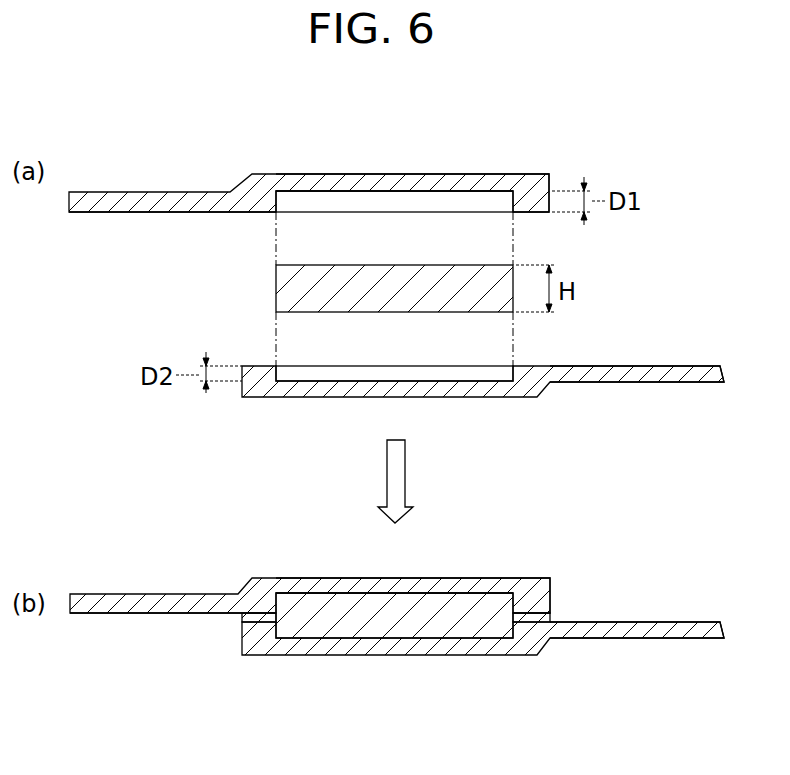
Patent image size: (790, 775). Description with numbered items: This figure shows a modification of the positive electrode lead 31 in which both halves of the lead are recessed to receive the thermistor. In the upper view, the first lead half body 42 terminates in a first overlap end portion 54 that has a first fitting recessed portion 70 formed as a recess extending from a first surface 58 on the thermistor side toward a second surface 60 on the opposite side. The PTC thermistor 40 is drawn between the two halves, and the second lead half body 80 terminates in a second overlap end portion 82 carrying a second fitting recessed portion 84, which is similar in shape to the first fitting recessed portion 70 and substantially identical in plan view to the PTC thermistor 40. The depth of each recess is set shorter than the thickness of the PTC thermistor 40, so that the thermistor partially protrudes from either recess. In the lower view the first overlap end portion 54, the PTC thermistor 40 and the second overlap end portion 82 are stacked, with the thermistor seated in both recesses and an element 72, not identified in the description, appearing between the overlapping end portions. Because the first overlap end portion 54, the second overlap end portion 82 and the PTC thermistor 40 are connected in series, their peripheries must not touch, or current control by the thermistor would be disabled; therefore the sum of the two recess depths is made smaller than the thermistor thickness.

The positive electrode lead 31 is at (562, 565).
The PTC thermistor 40 is at (276, 288).
The first lead half body 42 is at (136, 192).
The first overlap end portion 54 is at (530, 174).
The first surface 58 is at (191, 213).
The second surface 60 is at (303, 174).
The first fitting recessed portion 70 is at (333, 193).
The bonding layer 72 is at (260, 615).
The second lead half body 80 is at (653, 383).
The second overlap end portion 82 is at (267, 398).
The second fitting recessed portion 84 is at (470, 380).